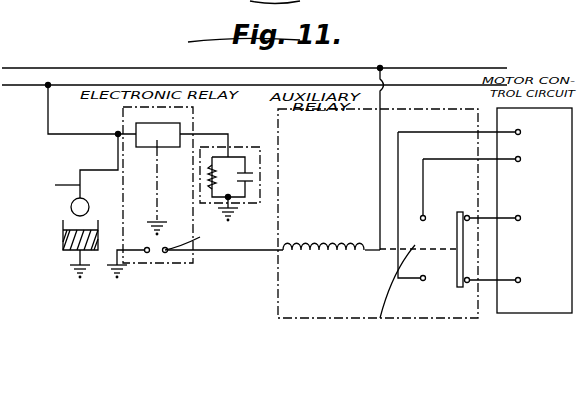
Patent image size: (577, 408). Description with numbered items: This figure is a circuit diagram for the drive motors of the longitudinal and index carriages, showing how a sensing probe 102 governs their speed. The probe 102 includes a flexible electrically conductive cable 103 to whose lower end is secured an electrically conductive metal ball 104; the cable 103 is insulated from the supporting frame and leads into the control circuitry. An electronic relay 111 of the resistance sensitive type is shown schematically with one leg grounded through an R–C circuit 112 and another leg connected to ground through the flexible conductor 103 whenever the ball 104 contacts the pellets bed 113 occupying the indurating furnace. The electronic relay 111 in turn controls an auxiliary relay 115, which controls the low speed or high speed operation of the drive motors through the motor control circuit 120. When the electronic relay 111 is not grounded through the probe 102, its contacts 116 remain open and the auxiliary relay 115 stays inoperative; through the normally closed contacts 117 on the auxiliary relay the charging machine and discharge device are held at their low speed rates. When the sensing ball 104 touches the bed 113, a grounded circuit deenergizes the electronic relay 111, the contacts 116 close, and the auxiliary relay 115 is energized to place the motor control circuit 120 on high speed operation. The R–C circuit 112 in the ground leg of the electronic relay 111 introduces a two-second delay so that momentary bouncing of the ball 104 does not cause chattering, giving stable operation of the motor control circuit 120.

The sensing probe 102 is at (72, 171).
The flexible electrically conductive cable 103 is at (43, 181).
The electrically conductive metal ball 104 is at (71, 206).
The pellets bed 113 is at (63, 240).
The electronic relay 111 is at (182, 256).
The R–C circuit 112 is at (252, 189).
The auxiliary relay 115 is at (335, 310).
The electronic relay contacts 116 is at (197, 238).
The normally closed contacts 117 is at (470, 260).
The motor control circuit 120 is at (548, 305).